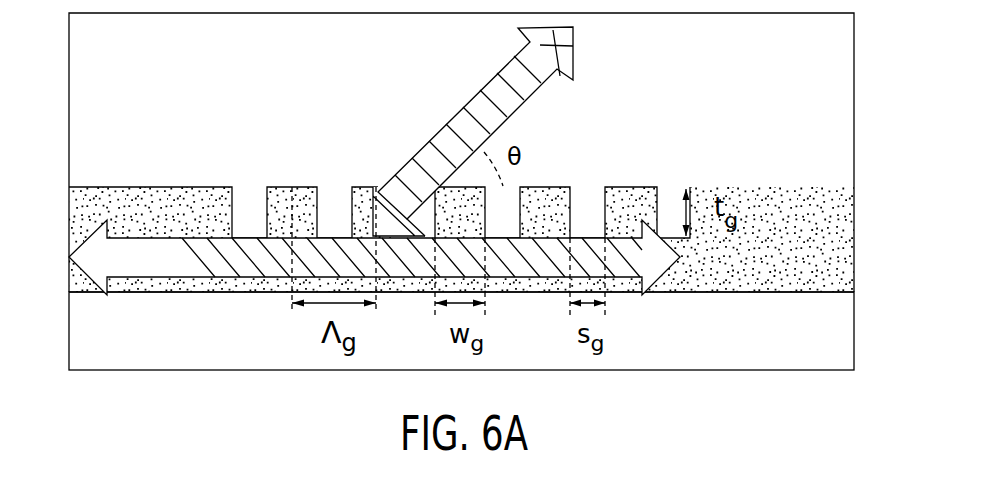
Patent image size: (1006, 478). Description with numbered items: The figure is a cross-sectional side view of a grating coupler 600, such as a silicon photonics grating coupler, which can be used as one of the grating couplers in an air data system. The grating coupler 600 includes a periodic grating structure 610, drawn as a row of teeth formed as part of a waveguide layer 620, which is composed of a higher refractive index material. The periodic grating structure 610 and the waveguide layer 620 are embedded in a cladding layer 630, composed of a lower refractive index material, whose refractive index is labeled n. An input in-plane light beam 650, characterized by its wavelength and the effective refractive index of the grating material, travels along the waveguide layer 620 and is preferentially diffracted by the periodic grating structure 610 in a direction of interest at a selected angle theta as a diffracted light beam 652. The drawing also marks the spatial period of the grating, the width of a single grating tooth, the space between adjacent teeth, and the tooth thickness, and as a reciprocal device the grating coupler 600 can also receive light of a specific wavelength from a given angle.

The grating coupler 600 is at (896, 210).
The periodic grating structure 610 is at (357, 192).
The waveguide layer 620 is at (178, 196).
The cladding layer 630 is at (732, 353).
The input in-plane light beam 650 is at (218, 262).
The diffracted light beam 652 is at (522, 97).